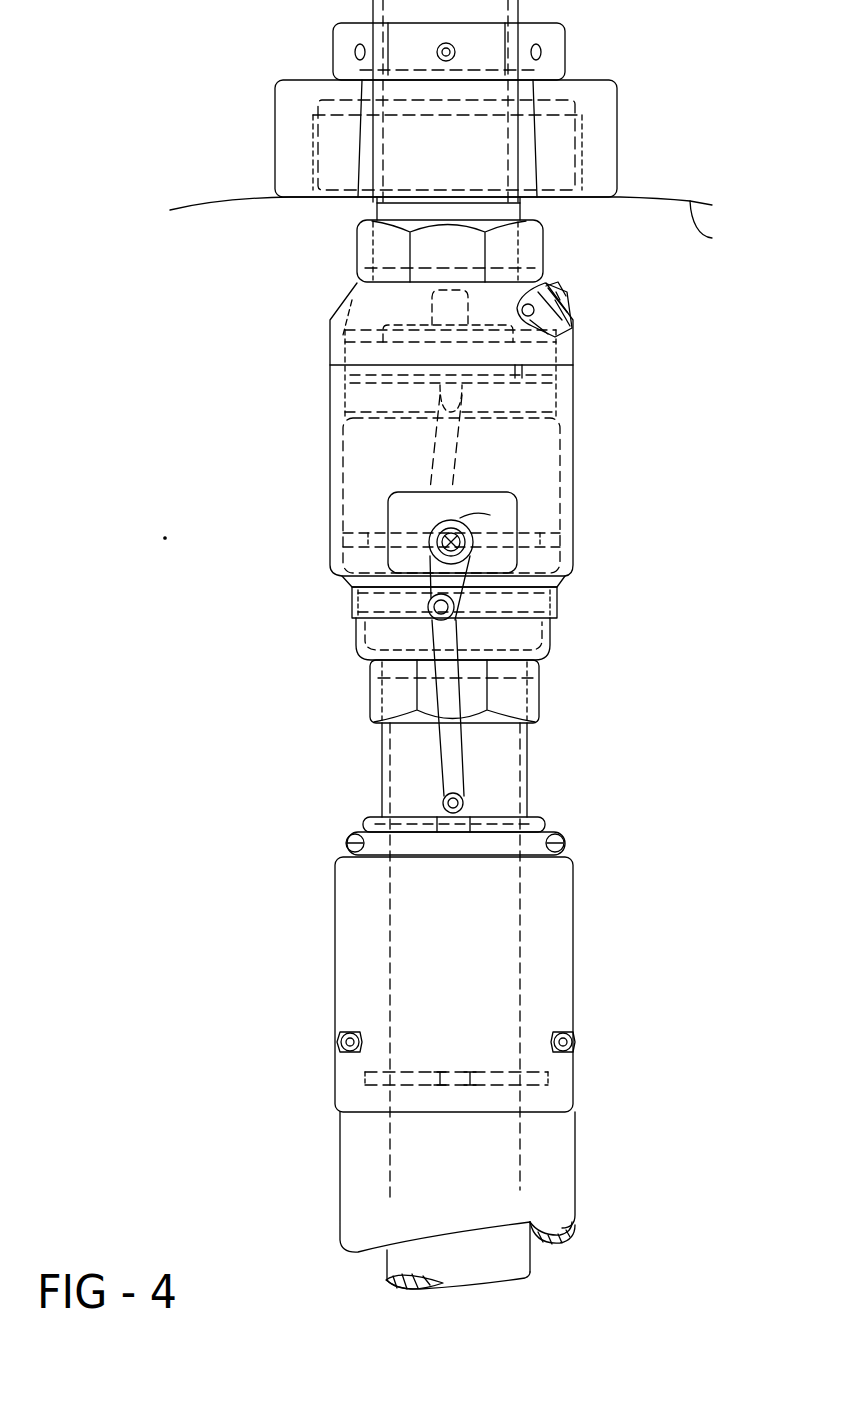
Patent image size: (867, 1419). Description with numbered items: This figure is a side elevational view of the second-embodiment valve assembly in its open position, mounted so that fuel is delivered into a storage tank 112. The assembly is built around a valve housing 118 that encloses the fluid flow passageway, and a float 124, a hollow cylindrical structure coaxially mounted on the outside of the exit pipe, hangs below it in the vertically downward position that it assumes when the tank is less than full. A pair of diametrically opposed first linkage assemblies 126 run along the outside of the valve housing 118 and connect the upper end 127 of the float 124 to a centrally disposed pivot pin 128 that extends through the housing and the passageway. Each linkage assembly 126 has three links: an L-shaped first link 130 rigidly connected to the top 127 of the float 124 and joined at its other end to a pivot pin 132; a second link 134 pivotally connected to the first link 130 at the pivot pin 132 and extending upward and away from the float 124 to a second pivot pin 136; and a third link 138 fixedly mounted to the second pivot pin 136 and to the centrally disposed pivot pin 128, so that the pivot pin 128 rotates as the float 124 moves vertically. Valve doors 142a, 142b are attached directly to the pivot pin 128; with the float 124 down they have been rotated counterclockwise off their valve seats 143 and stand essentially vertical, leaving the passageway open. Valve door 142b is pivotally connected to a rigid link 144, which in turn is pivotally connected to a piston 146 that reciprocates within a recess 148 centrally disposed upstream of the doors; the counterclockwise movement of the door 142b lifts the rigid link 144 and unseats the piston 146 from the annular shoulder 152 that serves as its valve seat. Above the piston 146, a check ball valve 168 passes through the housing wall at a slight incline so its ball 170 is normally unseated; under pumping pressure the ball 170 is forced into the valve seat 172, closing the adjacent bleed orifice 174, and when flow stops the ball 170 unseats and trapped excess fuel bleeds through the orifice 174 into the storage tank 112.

The storage tank 112 is at (469, 140).
The valve housing 118 is at (573, 453).
The float 124 is at (573, 950).
The first linkage assembly 126 is at (462, 745).
The upper end of the float 127 is at (546, 824).
The centrally disposed pivot pin 128 is at (470, 527).
The first link 130 is at (445, 836).
The pivot pin 132 is at (462, 800).
The second link 134 is at (436, 745).
The second pivot pin 136 is at (360, 606).
The third link 138 is at (348, 580).
The valve door 142a is at (468, 570).
The valve door 142b is at (430, 490).
The valve seats 143 is at (368, 535).
The rigid link 144 is at (428, 465).
The piston 146 is at (522, 372).
The recess 148 is at (375, 338).
The annular shoulder 152 is at (375, 410).
The check ball valve 168 is at (562, 312).
The check ball 170 is at (552, 330).
The valve seat 172 is at (556, 300).
The bleed orifice 174 is at (548, 298).